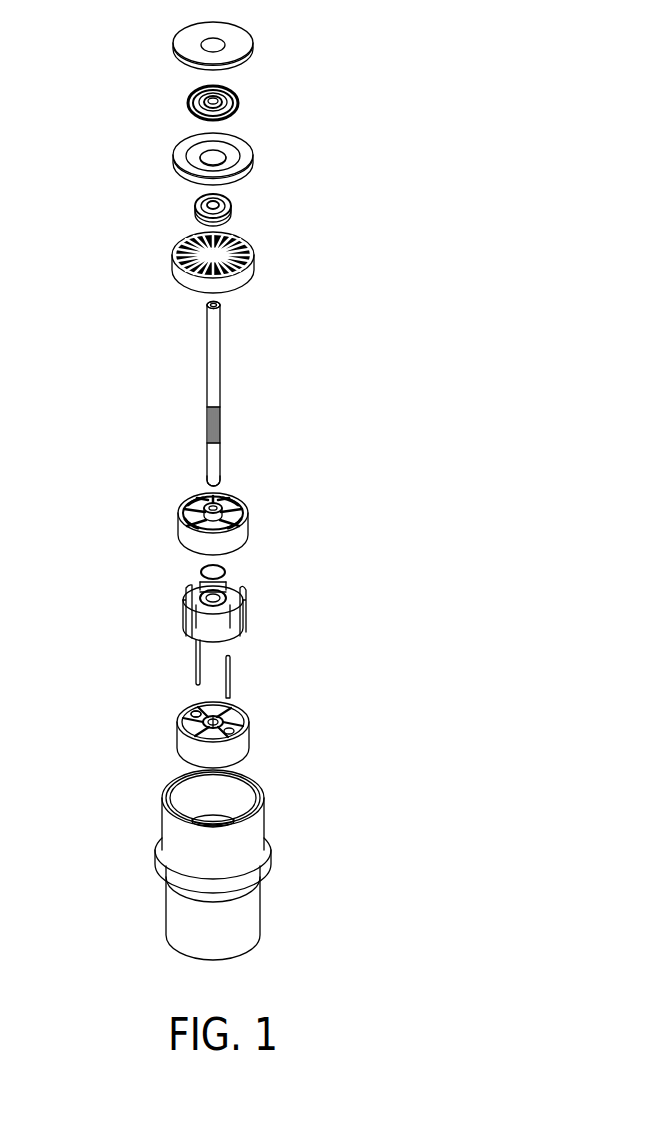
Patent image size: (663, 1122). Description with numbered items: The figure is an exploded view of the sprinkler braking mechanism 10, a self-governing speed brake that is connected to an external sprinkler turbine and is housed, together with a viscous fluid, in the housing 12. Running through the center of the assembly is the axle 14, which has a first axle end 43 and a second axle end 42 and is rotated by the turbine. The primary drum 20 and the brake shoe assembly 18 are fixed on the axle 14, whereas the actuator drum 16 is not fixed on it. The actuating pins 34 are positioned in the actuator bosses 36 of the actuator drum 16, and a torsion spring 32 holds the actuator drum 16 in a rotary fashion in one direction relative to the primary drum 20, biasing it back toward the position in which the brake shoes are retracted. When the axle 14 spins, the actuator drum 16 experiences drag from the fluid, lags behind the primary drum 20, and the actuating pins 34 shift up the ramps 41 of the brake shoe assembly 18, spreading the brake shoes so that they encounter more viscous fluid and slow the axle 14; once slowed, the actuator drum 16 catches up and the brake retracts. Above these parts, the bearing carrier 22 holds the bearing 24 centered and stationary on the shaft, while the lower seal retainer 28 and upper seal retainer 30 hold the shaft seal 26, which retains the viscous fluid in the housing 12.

The sprinkler braking mechanism 10 is at (435, 378).
The housing 12 is at (253, 910).
The axle 14 is at (213, 368).
The actuator drum 16 is at (227, 753).
The brake shoe assembly 18 is at (245, 622).
The primary drum 20 is at (243, 537).
The bearing carrier 22 is at (242, 283).
The bearing 24 is at (230, 215).
The shaft seal 26 is at (238, 100).
The lower seal retainer 28 is at (247, 153).
The upper seal retainer 30 is at (237, 48).
The torsion spring 32 is at (197, 567).
The actuating pins 34 is at (232, 677).
The actuator bosses 36 is at (183, 720).
The ramps 41 is at (195, 633).
The second axle end 42 is at (215, 315).
The first axle end 43 is at (215, 477).